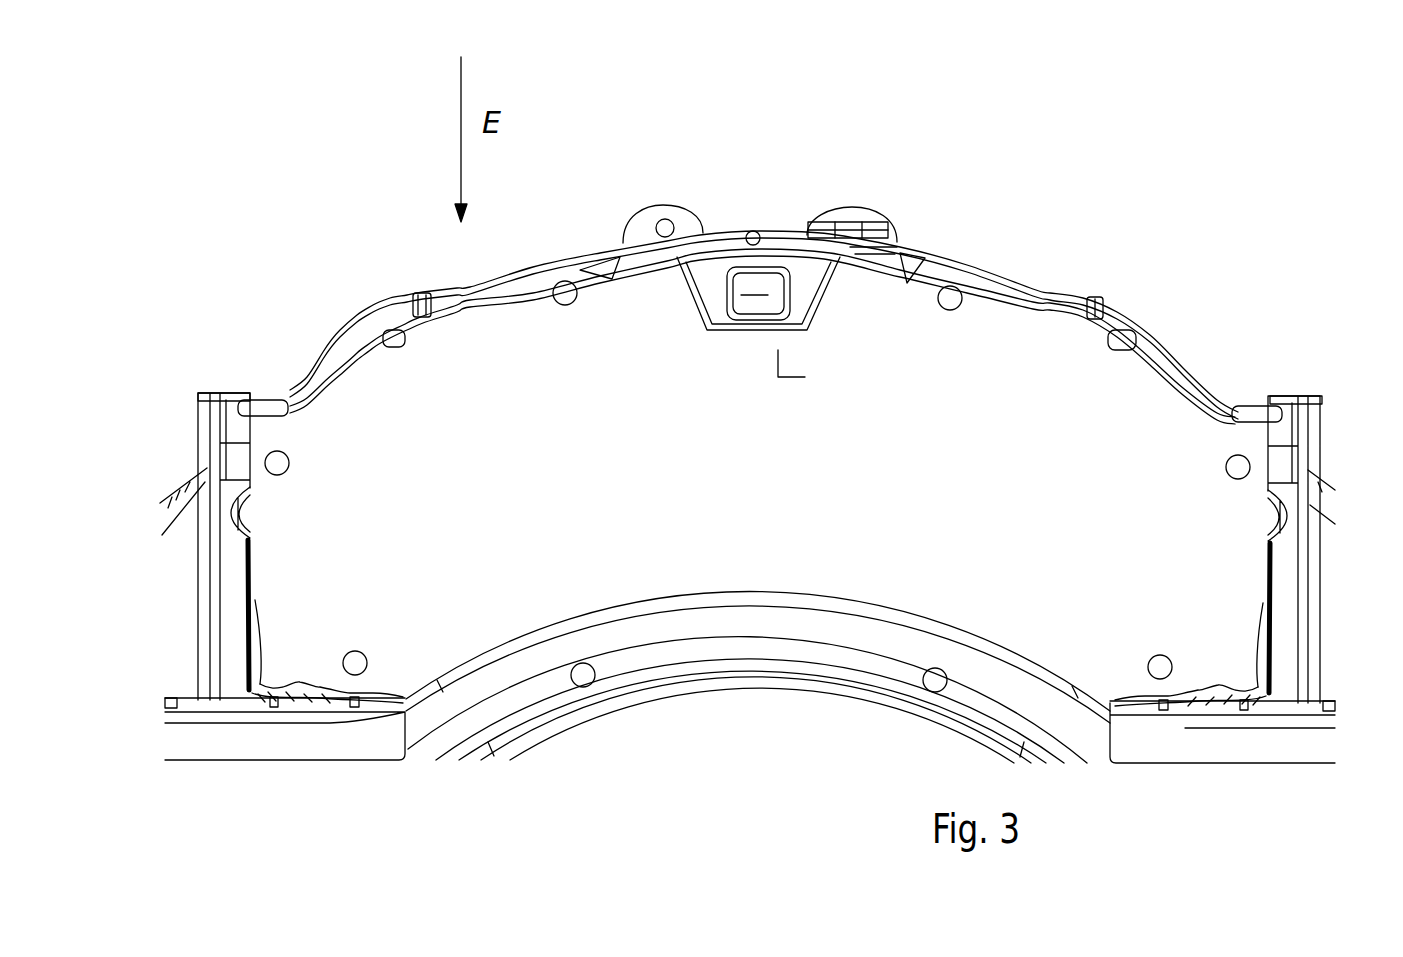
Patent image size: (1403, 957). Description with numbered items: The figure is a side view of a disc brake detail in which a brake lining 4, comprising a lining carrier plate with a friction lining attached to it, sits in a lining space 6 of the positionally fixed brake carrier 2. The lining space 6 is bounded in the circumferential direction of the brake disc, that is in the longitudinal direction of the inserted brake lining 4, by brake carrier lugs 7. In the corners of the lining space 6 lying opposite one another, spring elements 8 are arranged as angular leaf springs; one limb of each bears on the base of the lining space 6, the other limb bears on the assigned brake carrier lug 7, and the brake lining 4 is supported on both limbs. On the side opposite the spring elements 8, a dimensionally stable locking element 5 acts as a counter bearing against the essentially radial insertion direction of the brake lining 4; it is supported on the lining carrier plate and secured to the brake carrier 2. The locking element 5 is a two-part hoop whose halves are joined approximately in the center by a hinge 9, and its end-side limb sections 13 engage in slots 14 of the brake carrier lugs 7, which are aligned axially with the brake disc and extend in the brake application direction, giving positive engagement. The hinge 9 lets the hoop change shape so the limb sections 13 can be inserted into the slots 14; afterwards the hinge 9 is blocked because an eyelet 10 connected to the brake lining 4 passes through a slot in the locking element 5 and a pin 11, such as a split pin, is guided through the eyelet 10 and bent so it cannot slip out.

The brake carrier 2 is at (318, 742).
The brake lining 4 is at (760, 600).
The locking element 5 is at (921, 254).
The lining space 6 is at (285, 689).
The brake carrier lug 7 is at (237, 584).
The spring element 8 is at (303, 688).
The hinge 9 is at (758, 231).
The eyelet 10 is at (848, 216).
The pin 11 is at (872, 249).
The limb section 13 is at (261, 401).
The slot 14 is at (223, 392).